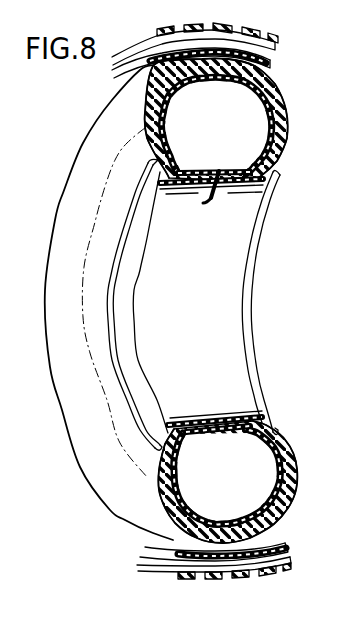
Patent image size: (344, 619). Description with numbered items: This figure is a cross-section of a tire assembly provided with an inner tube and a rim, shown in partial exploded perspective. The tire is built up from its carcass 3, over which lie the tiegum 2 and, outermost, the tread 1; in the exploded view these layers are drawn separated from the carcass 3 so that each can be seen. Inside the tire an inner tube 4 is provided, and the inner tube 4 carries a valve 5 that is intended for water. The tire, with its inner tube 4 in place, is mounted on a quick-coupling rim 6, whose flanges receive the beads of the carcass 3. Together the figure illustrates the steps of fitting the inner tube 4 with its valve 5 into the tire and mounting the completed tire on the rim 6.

The tread 1 is at (275, 44).
The tiegum 2 is at (269, 62).
The carcass 3 is at (278, 90).
The inner tube 4 is at (283, 115).
The valve 5 is at (204, 204).
The rim 6 is at (252, 292).